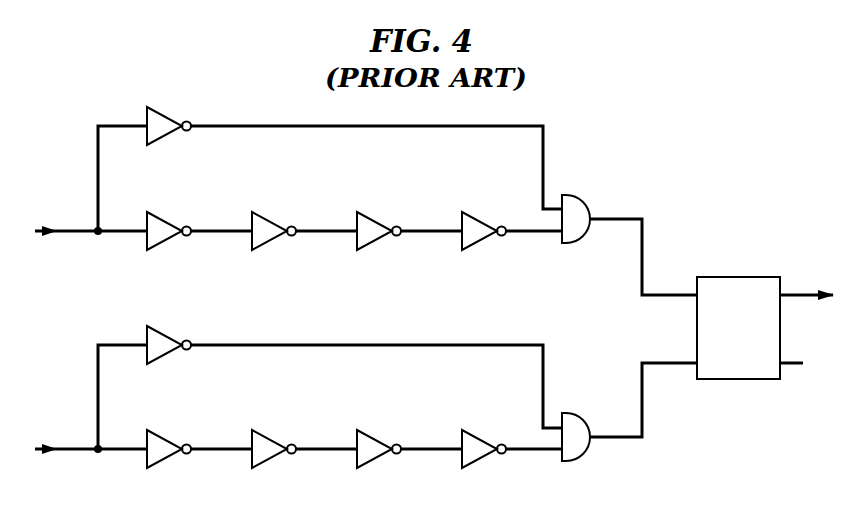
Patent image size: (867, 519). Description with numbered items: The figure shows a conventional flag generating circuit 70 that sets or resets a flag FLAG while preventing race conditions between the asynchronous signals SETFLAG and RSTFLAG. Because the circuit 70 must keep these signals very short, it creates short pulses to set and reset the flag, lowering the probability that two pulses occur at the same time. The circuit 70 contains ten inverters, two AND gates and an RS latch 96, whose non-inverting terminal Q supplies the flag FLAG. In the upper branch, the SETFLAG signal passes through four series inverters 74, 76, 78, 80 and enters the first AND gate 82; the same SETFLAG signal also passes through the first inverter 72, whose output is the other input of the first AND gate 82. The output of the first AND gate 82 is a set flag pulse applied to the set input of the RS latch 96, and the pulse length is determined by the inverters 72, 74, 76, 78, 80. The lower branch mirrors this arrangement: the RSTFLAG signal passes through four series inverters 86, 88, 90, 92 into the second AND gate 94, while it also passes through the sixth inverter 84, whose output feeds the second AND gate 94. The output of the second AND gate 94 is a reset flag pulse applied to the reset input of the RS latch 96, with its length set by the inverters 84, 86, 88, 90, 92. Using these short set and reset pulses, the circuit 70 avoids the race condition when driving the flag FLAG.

The flag generating circuit 70 is at (640, 160).
The first inverter 72 is at (165, 108).
The inverter 74 is at (165, 213).
The inverter 76 is at (270, 213).
The inverter 78 is at (375, 213).
The inverter 80 is at (480, 213).
The first AND gate 82 is at (573, 195).
The sixth inverter 84 is at (165, 327).
The inverter 86 is at (165, 431).
The inverter 88 is at (270, 431).
The inverter 90 is at (375, 431).
The inverter 92 is at (480, 431).
The second AND gate 94 is at (572, 413).
The RS latch 96 is at (742, 277).